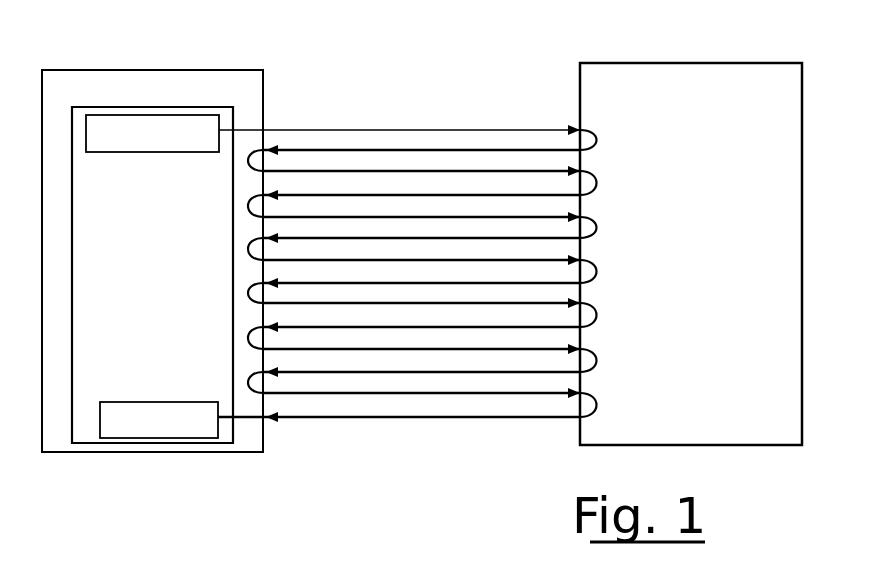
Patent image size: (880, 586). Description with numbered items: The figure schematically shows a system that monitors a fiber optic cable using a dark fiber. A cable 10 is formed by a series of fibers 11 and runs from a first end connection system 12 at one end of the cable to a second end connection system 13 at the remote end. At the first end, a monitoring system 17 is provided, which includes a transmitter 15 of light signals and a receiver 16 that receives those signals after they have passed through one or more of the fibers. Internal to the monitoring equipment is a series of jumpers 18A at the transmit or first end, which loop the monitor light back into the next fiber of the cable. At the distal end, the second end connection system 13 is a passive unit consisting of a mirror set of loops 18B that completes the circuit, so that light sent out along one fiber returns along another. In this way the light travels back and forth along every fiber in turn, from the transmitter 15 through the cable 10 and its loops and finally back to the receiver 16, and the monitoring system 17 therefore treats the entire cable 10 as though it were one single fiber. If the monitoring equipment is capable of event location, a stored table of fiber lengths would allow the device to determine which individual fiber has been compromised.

The cable 10 is at (403, 433).
The fibers 11 is at (410, 128).
The first end connection system 12 is at (243, 85).
The second end connection system 13 is at (664, 63).
The transmitter 15 is at (160, 152).
The receiver 16 is at (146, 402).
The monitoring system 17 is at (71, 107).
The jumpers 18A is at (255, 128).
The loops 18B is at (597, 187).